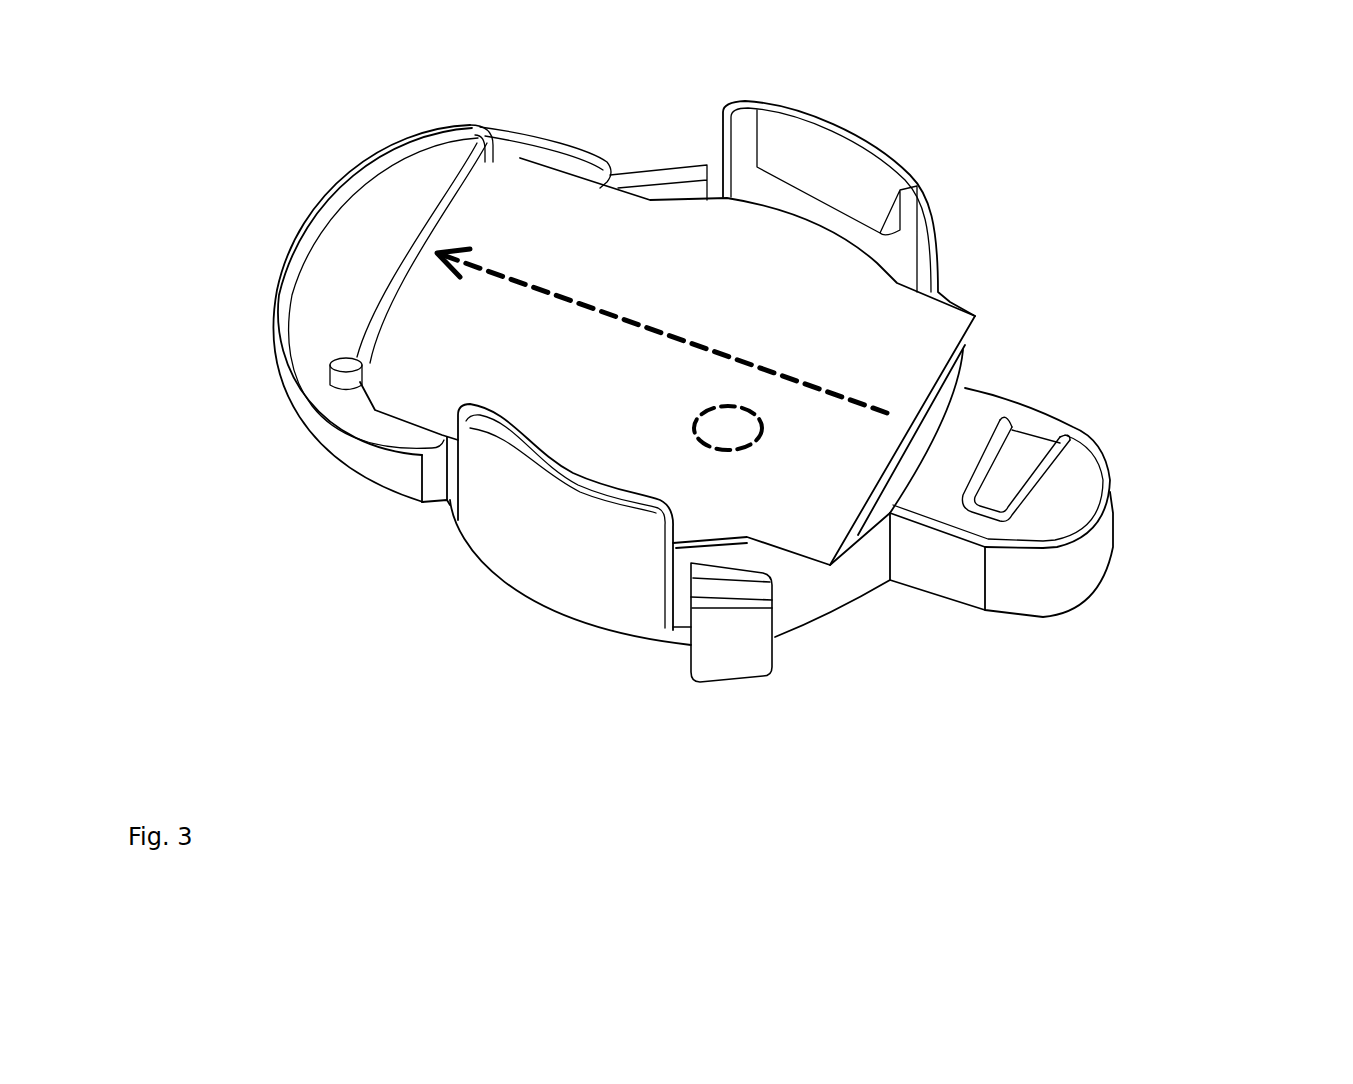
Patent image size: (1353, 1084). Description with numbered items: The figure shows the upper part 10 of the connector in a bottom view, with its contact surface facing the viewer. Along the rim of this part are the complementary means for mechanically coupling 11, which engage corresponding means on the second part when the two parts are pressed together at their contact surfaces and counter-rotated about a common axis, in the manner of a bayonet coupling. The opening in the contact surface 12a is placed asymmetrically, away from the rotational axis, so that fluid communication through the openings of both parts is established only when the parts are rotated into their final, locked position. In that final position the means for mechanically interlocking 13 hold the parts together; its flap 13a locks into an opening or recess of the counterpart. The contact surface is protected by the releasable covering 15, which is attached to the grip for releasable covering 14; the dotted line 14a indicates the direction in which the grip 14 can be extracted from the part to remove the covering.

The upper part 10 is at (630, 537).
The complementary means for mechanically coupling 11 is at (843, 132).
The opening in the contact surface 12a is at (757, 433).
The means for mechanically interlocking 13 is at (1070, 487).
The flap 13a is at (1003, 500).
The grip for releasable covering 14 is at (322, 242).
The direction of extraction of grip 14a is at (662, 318).
The releasable covering 15 is at (523, 183).